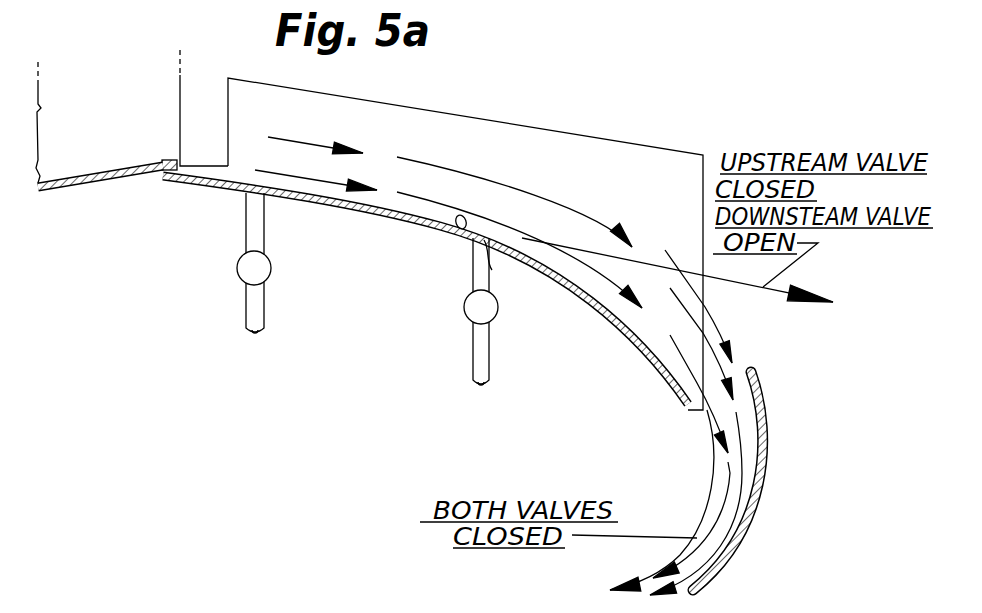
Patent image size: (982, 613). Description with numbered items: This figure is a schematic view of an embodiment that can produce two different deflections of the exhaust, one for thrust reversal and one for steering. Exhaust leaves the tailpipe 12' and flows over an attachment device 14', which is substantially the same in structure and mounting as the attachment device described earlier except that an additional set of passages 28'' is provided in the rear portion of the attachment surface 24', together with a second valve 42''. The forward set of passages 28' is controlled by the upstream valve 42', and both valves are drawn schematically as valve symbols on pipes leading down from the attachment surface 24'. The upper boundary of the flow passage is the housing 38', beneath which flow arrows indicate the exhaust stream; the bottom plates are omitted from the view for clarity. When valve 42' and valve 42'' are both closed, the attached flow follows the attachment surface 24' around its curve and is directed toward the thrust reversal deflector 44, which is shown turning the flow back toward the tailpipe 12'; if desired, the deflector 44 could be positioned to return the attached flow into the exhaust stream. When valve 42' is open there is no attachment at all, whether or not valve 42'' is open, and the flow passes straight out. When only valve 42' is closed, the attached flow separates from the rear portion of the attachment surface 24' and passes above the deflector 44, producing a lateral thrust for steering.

The tailpipe 12' is at (100, 203).
The attachment device 14' is at (325, 357).
The attachment surface 24' is at (425, 290).
The passages 28' is at (210, 263).
The additional set of passages 28'' is at (521, 311).
The flow passage housing 38' is at (473, 244).
The valve 42' is at (213, 282).
The valve 42'' is at (439, 311).
The thrust reversal deflector 44 is at (760, 470).